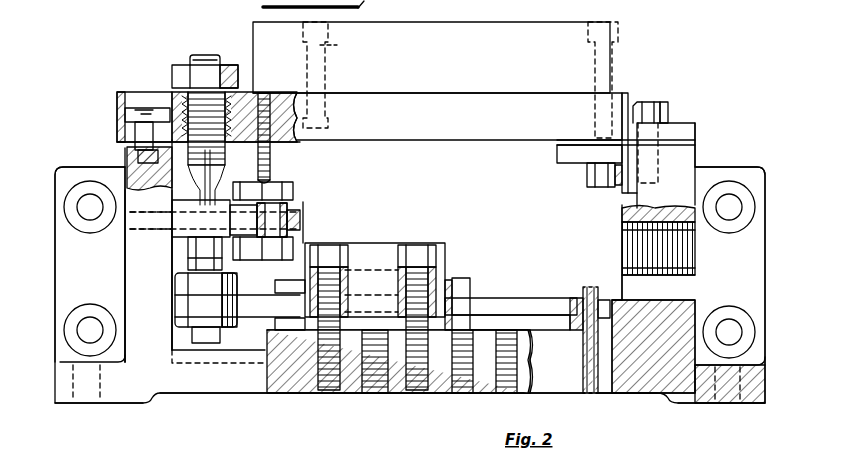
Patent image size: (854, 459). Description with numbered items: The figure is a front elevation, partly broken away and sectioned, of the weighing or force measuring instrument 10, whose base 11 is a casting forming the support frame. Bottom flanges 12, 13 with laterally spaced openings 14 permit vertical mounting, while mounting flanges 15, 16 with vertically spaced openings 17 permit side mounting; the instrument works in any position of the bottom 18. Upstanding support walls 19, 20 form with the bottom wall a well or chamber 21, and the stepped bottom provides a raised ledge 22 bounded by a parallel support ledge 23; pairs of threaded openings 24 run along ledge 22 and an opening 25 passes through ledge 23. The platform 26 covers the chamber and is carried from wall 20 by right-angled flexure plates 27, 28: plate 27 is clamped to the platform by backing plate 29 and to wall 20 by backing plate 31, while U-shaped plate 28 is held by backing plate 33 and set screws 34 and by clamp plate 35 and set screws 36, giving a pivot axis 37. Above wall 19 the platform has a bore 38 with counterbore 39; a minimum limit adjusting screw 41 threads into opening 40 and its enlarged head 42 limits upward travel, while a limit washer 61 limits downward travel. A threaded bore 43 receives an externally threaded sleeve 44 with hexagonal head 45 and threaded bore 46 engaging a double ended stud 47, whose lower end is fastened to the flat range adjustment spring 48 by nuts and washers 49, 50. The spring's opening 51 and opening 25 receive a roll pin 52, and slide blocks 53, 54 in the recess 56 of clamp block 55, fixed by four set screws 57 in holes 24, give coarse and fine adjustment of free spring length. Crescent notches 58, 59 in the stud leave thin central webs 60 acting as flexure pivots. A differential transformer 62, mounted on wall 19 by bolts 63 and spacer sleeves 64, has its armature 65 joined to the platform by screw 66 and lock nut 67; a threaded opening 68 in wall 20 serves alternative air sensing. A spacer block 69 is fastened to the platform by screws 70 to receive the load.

The weighing or force measuring instrument 10 is at (610, 60).
The base 11 is at (160, 396).
The bottom flange 12 is at (68, 404).
The bottom flange 13 is at (705, 403).
The openings 14 is at (745, 418).
The mounting flange 15 is at (62, 170).
The mounting flange 16 is at (752, 167).
The openings 17 is at (770, 318).
The bottom wall 18 is at (200, 393).
The support wall 19 is at (120, 255).
The support wall 20 is at (653, 342).
The well or chamber 21 is at (440, 228).
The ledge 22 is at (490, 318).
The support ledge 23 is at (575, 298).
The threaded openings 24 is at (470, 415).
The opening 25 is at (595, 393).
The platform 26 is at (405, 140).
The flexure plate 27 is at (605, 215).
The flexure plate 28 is at (695, 143).
The clamp or backing plate 29 is at (650, 100).
The backing plate 31 is at (600, 187).
The backing plate 33 is at (565, 163).
The set screws 34 is at (600, 190).
The clamp or backing plate 35 is at (695, 120).
The set screws 36 is at (668, 110).
The axis 37 is at (650, 150).
The bore 38 is at (117, 140).
The counterbore 39 is at (117, 100).
The threaded opening 40 is at (172, 185).
The minimum limit adjusting screw 41 is at (149, 168).
The enlarged head 42 is at (125, 116).
The threaded bore 43 is at (180, 98).
The externally threaded sleeve 44 is at (216, 115).
The hexagonal head 45 is at (182, 68).
The threaded bore 46 is at (232, 66).
The double ended stud 47 is at (208, 54).
The range adjustment spring 48 is at (525, 298).
The connecting nut and end washer 49 is at (237, 290).
The connecting nut and end washer 50 is at (232, 325).
The opening 51 is at (604, 300).
The roll pin 52 is at (591, 287).
The slide block 53 is at (470, 296).
The slide block 54 is at (460, 280).
The clamp block 55 is at (385, 243).
The recess 56 is at (365, 258).
The set screws 57 is at (425, 232).
The notches 58 is at (235, 190).
The notches 59 is at (238, 252).
The central webs 60 is at (160, 280).
The limit washer 61 is at (130, 130).
The differential transformer 62 is at (303, 218).
The connecting bolts 63 is at (287, 215).
The spacer sleeves 64 is at (190, 252).
The transformer armature 65 is at (303, 218).
The screw 66 is at (290, 152).
The lock nut 67 is at (278, 173).
The threaded opening 68 is at (695, 265).
The spacer block 69 is at (492, 25).
The screws 70 is at (342, 48).